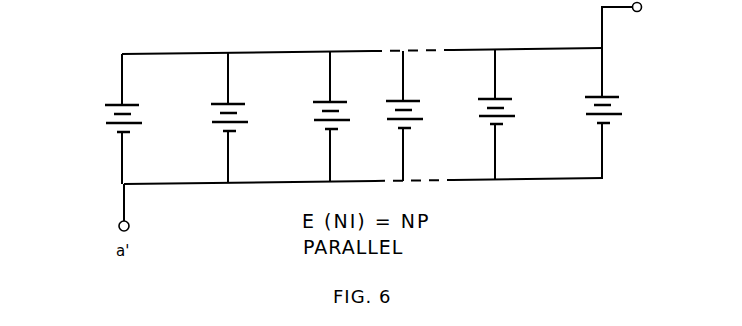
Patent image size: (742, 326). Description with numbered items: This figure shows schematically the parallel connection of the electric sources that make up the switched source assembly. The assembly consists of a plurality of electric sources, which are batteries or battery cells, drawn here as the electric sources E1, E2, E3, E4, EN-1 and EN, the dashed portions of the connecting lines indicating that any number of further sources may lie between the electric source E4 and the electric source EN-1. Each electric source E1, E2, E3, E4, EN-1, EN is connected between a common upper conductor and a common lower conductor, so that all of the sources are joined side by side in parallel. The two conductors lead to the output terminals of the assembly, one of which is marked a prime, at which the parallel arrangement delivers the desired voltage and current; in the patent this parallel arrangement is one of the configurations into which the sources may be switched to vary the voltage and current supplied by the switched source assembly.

The electric source E1 is at (114, 119).
The electric source E2 is at (221, 118).
The electric source E3 is at (323, 117).
The electric source E4 is at (396, 116).
The electric source EN-1 is at (477, 115).
The electric source EN is at (614, 113).